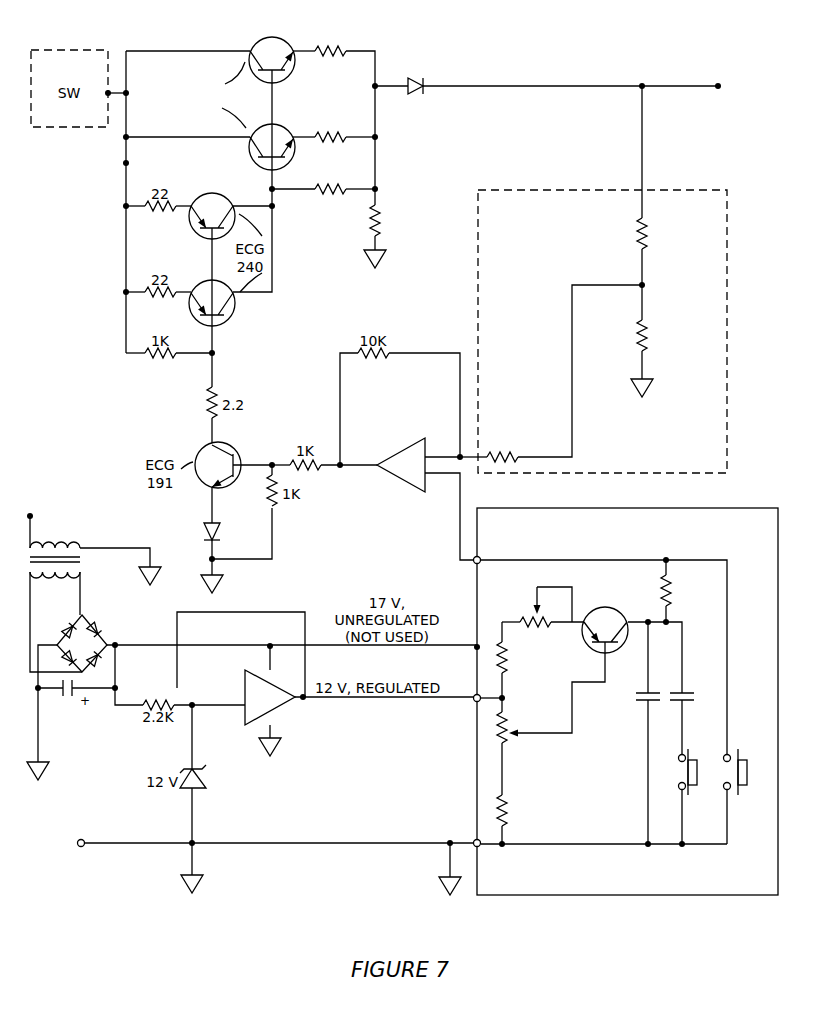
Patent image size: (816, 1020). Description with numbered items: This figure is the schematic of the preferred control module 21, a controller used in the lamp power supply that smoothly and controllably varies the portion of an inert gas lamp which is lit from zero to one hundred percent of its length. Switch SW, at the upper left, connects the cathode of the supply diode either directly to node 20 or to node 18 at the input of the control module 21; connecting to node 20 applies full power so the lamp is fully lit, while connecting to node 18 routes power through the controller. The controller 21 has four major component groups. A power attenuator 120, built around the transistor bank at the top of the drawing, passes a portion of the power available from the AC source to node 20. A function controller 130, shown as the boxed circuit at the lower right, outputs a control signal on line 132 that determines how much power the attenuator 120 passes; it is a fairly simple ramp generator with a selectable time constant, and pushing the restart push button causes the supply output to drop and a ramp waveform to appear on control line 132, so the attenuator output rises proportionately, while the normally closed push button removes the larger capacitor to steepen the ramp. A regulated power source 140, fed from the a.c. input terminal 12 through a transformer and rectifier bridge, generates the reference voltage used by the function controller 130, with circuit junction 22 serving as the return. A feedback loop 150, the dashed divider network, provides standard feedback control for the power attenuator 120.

The input terminal 12 is at (40, 515).
The node 18 is at (121, 163).
The node 20 is at (726, 87).
The control module 21 is at (424, 180).
The circuit junction 22 is at (74, 843).
The power attenuator 120 is at (389, 43).
The function controller 130 is at (642, 884).
The control line 132 is at (466, 499).
The regulated power source 140 is at (138, 625).
The feedback loop 150 is at (718, 236).